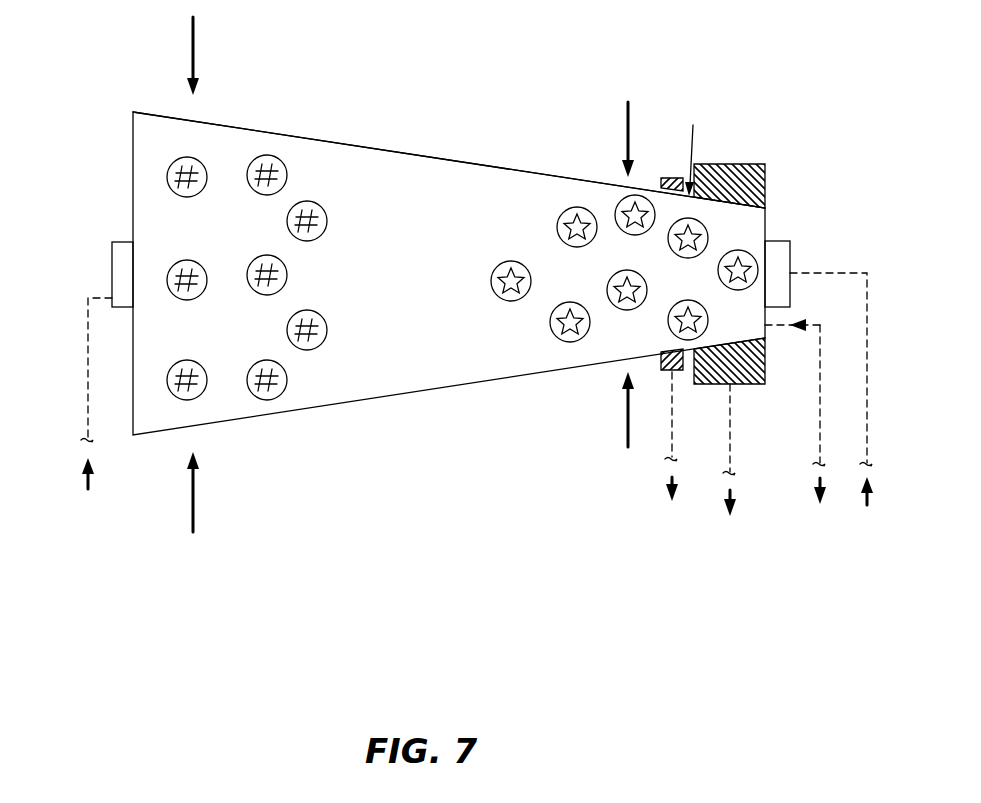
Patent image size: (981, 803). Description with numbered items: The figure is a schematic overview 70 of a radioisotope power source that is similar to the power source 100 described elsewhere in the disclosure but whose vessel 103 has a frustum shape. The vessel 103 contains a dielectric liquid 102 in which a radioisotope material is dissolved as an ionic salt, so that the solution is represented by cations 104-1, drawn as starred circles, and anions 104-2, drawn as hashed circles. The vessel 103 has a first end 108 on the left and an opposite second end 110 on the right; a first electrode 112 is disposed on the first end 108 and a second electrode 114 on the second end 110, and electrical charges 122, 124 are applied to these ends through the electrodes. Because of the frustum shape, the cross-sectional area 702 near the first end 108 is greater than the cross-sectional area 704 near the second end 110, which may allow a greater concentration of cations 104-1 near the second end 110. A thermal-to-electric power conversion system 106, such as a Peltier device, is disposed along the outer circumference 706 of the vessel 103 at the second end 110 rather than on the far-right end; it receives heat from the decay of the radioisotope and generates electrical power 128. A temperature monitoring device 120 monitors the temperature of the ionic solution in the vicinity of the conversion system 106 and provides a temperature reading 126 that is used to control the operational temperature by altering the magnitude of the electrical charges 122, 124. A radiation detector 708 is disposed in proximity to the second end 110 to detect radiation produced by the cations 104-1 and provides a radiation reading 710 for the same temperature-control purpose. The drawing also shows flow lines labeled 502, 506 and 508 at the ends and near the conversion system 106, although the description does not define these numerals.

The schematic overview 70 is at (85, 98).
The power source 100 is at (288, 72).
The dielectric liquid 102 is at (404, 233).
The vessel 103 is at (378, 142).
The cations 104-1 is at (575, 207).
The anions 104-2 is at (266, 155).
The thermal-to-electric power conversion system 106 is at (768, 180).
The first end 108 is at (110, 187).
The second end 110 is at (845, 186).
The first electrode 112 is at (112, 273).
The second electrode 114 is at (790, 255).
The temperature monitoring device 120 is at (782, 327).
The electrical charge 122 is at (88, 380).
The electrical charge 124 is at (867, 357).
The temperature reading 126 is at (820, 408).
The electrical power 128 is at (730, 430).
The inlet flow 502 is at (477, 495).
The electrode signal 506 is at (730, 517).
The outlet flow 508 is at (820, 505).
The cross-sectional area 702 is at (191, 45).
The cross-sectional area 704 is at (626, 127).
The outer circumference 706 is at (695, 146).
The radiation detector 708 is at (667, 177).
The radiation reading 710 is at (672, 451).